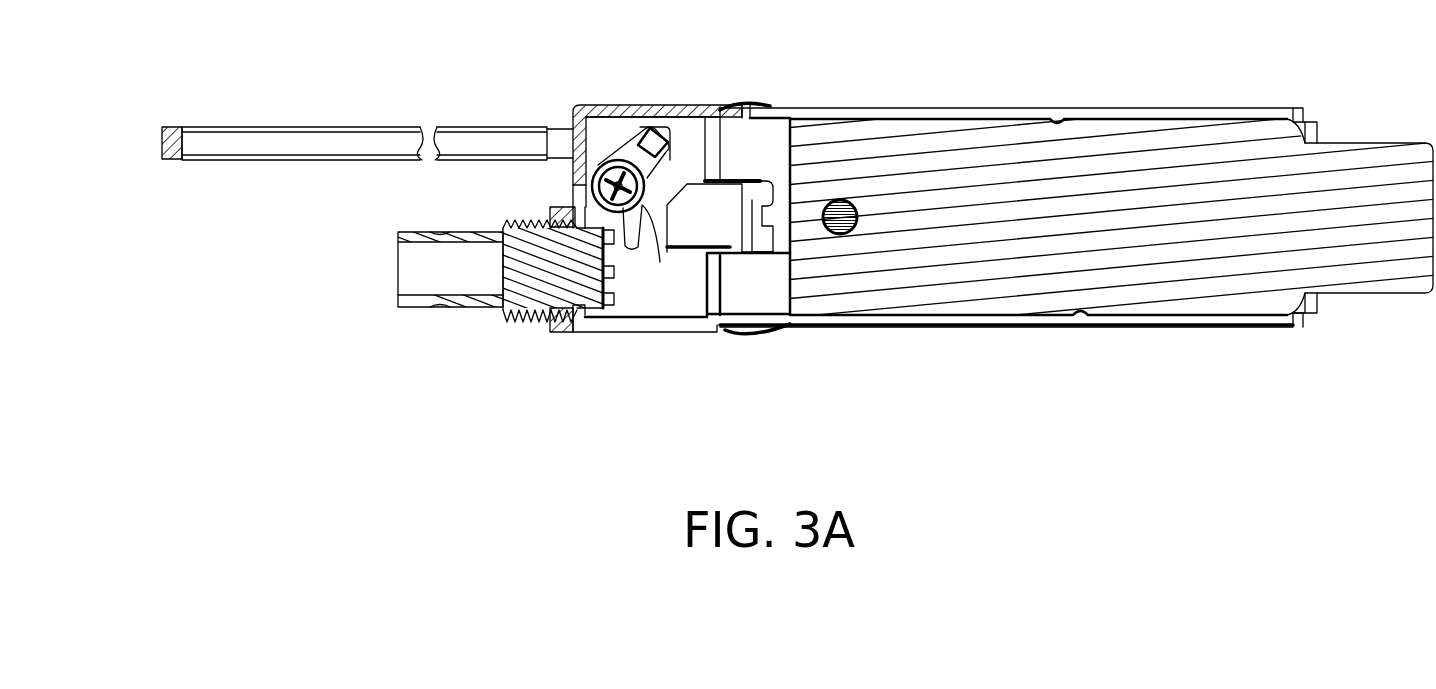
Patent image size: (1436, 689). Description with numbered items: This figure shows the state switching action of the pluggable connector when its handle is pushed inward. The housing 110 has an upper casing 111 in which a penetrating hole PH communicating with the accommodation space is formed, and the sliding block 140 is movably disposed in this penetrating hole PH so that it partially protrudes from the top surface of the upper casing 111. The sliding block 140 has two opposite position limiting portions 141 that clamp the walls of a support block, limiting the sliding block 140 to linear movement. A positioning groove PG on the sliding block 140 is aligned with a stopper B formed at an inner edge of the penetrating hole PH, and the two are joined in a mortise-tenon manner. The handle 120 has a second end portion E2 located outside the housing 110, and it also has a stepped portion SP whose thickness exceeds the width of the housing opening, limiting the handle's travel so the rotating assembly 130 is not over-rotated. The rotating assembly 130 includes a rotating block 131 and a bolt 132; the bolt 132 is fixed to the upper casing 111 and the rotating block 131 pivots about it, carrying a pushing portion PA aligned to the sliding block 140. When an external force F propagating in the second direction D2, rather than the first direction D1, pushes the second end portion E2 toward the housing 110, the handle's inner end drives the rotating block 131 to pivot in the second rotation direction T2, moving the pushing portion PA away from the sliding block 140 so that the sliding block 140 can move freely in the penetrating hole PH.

The housing 110 is at (1078, 239).
The upper casing 111 is at (1140, 323).
The handle 120 is at (340, 150).
The rotating assembly 130 is at (693, 400).
The rotating block 131 is at (642, 205).
The bolt 132 is at (596, 203).
The sliding block 140 is at (742, 255).
The position limiting portion 141 is at (688, 250).
The stopper B is at (790, 202).
The penetrating hole PH is at (760, 180).
The positioning groove PG is at (755, 217).
The pushing portion PA is at (636, 250).
The stepped portion SP is at (557, 133).
The second end portion E2 is at (176, 158).
The external force F is at (162, 147).
The first direction D1 is at (668, 227).
The second direction D2 is at (320, 98).
The second rotation direction T2 is at (648, 83).